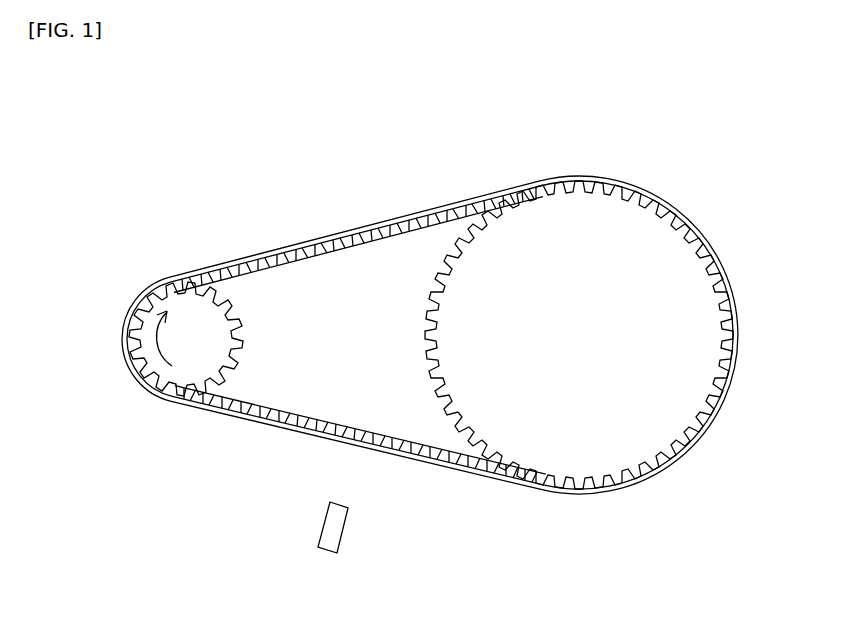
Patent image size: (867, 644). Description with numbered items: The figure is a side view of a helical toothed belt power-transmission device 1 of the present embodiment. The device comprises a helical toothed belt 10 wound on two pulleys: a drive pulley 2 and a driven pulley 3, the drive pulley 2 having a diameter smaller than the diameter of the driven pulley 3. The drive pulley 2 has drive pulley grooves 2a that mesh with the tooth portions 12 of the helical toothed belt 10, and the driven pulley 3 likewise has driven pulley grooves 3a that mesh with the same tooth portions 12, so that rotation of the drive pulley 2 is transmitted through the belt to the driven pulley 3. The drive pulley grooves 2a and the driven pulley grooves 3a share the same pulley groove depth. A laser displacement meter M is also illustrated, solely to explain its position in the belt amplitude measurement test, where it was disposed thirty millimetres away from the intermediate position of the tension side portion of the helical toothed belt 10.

The helical toothed belt power-transmission device 1 is at (205, 200).
The drive pulley 2 is at (225, 398).
The drive pulley grooves 2a is at (228, 302).
The driven pulley 3 is at (544, 385).
The driven pulley grooves 3a is at (425, 352).
The helical toothed belt 10 is at (430, 329).
The tooth portions 12 is at (356, 248).
The laser displacement meter M is at (322, 540).